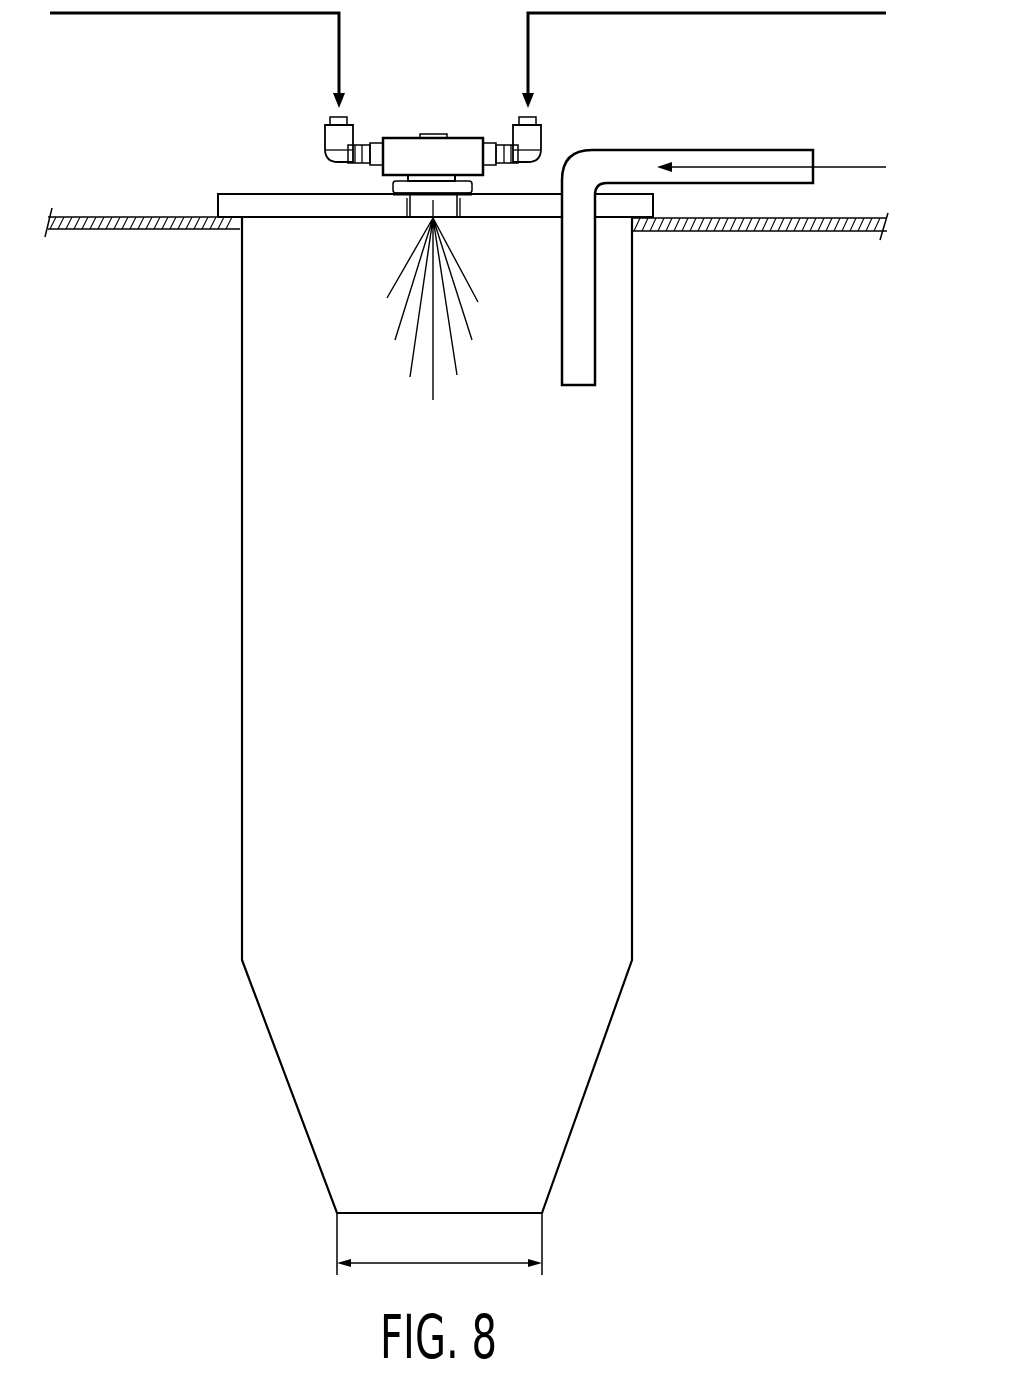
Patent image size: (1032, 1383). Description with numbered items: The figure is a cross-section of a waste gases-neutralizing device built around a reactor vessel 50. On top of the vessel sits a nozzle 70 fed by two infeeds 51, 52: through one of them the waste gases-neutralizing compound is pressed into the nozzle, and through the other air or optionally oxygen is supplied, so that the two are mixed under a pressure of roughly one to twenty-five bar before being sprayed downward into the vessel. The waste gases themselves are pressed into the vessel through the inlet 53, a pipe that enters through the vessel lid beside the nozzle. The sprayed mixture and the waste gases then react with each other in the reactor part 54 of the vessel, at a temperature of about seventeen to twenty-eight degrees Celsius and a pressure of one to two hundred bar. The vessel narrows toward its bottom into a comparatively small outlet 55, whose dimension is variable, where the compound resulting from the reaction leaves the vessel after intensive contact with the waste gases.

The reactor vessel 50 is at (632, 657).
The infeed 51 is at (338, 69).
The infeed 52 is at (529, 69).
The waste gases inlet 53 is at (836, 163).
The reactor part 54 is at (580, 507).
The outlet 55 is at (439, 1244).
The nozzle 70 is at (327, 155).